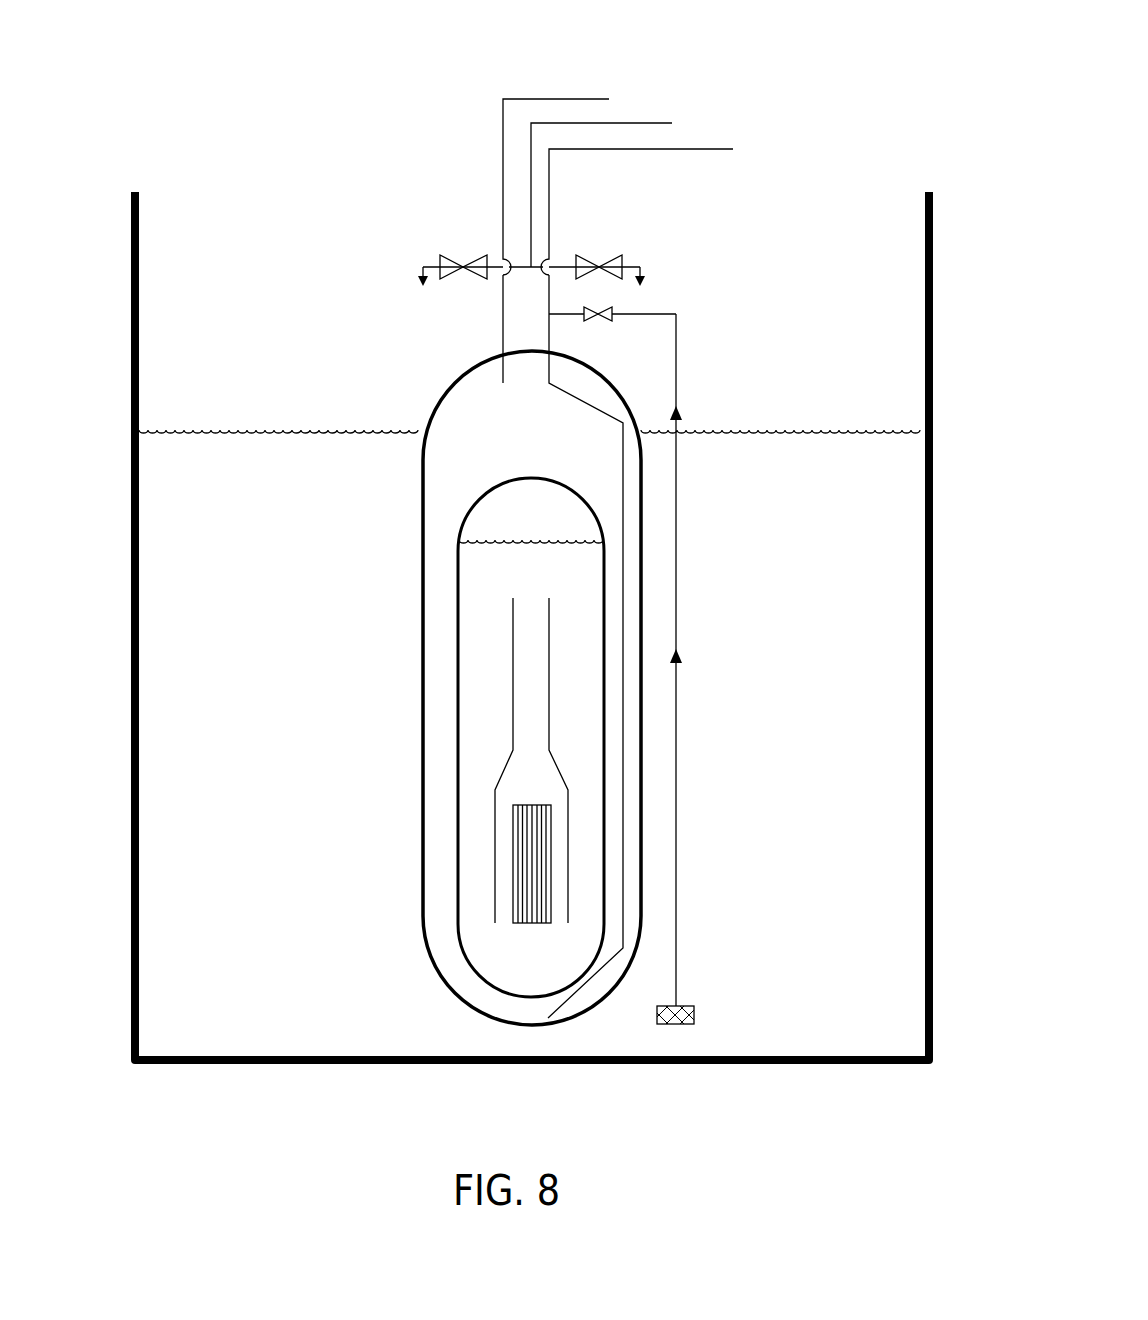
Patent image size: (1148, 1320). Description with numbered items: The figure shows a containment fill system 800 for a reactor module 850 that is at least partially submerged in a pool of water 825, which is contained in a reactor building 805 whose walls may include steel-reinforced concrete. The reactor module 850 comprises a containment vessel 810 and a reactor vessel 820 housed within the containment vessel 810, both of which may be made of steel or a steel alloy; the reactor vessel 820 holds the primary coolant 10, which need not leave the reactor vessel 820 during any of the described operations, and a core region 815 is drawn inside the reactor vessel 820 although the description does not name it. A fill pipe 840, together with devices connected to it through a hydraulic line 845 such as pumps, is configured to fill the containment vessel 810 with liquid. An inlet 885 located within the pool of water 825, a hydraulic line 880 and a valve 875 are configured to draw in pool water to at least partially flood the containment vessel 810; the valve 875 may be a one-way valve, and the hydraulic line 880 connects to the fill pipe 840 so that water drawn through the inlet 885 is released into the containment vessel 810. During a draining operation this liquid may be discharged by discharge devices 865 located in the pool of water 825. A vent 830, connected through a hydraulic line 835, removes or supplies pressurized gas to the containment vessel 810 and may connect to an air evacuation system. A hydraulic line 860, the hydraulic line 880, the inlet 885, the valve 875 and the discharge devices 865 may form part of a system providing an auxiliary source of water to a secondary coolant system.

The containment fill system 800 is at (216, 76).
The reactor building 805 is at (131, 560).
The containment vessel 810 is at (440, 386).
The reactor core 815 is at (530, 923).
The reactor vessel 820 is at (497, 490).
The pool of water 825 is at (303, 709).
The vent 830 is at (503, 383).
The hydraulic line 835 is at (590, 99).
The fill pipe 840 is at (620, 490).
The hydraulic line 845 is at (710, 149).
The reactor module 850 is at (327, 325).
The hydraulic line 860 is at (647, 123).
The discharge devices 865 is at (430, 257).
The valve 875 is at (590, 322).
The hydraulic line 880 is at (676, 605).
The inlet 885 is at (696, 1012).
The primary coolant 10 is at (544, 579).